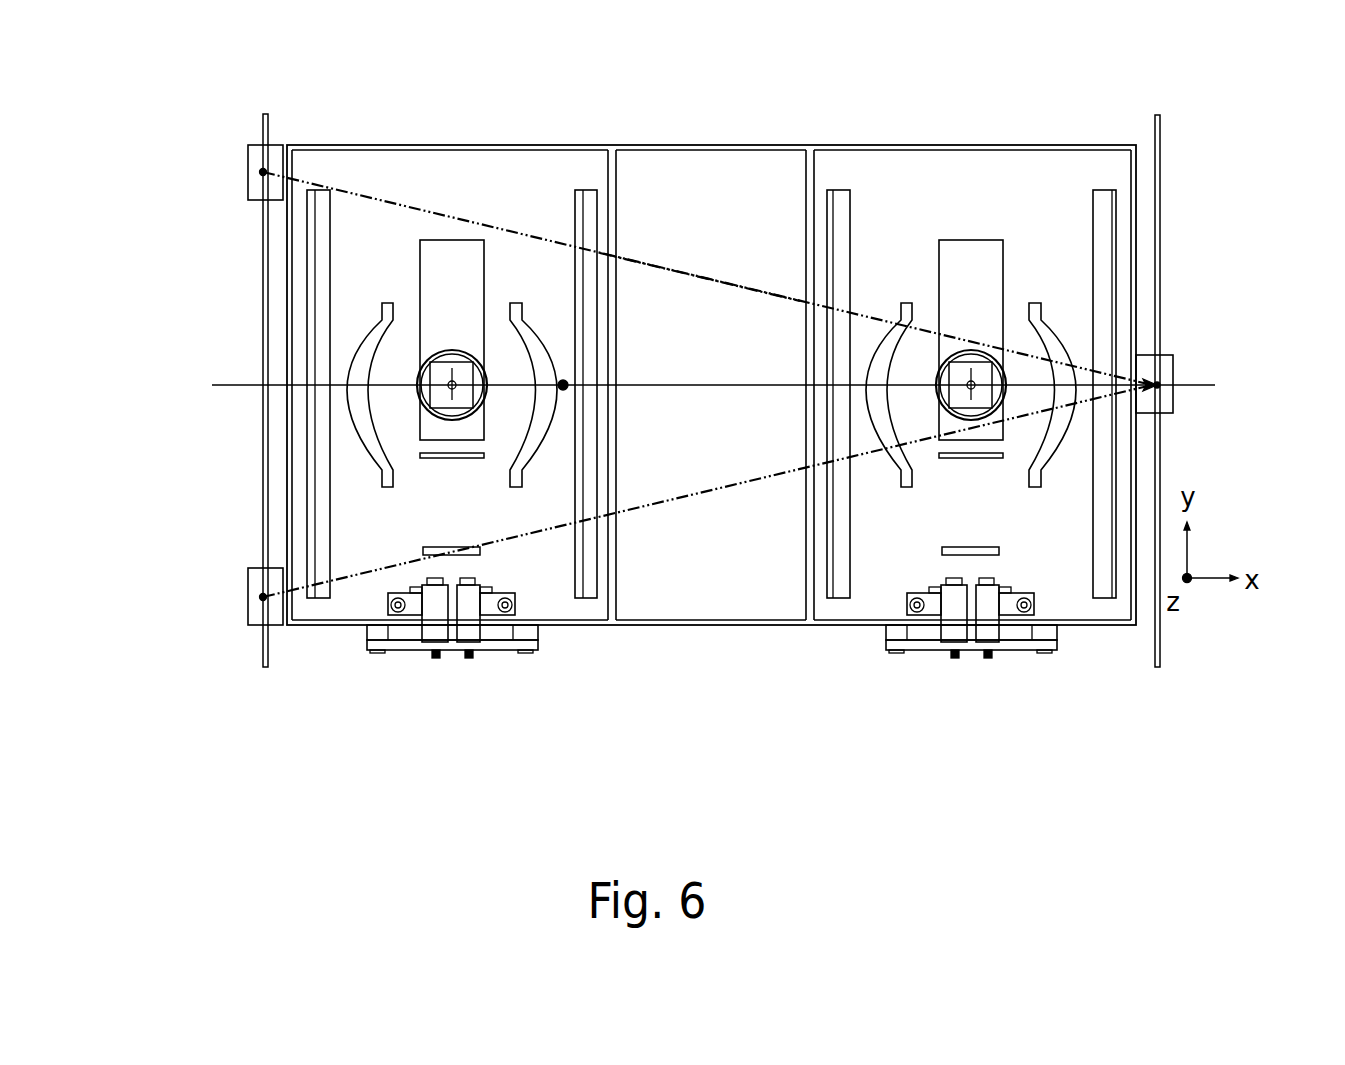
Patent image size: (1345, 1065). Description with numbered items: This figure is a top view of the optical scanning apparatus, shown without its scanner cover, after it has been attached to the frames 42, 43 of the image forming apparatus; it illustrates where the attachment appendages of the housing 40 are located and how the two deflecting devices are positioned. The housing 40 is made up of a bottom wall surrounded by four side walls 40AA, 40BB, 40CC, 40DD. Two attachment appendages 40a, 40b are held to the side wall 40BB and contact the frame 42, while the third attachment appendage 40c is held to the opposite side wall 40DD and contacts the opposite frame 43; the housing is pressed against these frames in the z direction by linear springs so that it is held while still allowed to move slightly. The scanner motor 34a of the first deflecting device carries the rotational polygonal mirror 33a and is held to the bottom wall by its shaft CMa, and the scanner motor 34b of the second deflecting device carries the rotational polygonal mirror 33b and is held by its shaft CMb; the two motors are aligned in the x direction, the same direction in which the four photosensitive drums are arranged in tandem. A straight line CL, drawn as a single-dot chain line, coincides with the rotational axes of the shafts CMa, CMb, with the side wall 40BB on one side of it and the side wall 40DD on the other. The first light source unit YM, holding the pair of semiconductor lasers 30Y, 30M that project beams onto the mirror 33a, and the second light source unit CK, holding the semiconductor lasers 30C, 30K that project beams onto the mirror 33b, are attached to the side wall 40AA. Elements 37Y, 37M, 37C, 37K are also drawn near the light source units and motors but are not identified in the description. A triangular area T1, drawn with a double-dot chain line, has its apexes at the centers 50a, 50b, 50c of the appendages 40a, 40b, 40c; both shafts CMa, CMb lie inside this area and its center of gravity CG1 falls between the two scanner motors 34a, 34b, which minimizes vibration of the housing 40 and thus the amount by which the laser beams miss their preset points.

The semiconductor laser 30Y is at (435, 658).
The semiconductor laser 30M is at (468, 658).
The semiconductor laser 30C is at (954, 658).
The semiconductor laser 30K is at (988, 658).
The first light source unit YM is at (485, 792).
The second light source unit CK is at (1030, 793).
The rotational polygonal mirror 33a is at (452, 385).
The rotational polygonal mirror 33b is at (971, 385).
The scanner motor 34a is at (437, 240).
The scanner motor 34b is at (975, 240).
The shaft CMa is at (433, 357).
The shaft CMb is at (940, 400).
The guide plate 37Y is at (332, 190).
The guide plate 37M is at (582, 190).
The guide plate 37C is at (833, 190).
The guide plate 37K is at (1105, 190).
The housing 40 is at (662, 145).
The side wall 40AA is at (707, 627).
The side wall 40BB is at (287, 418).
The side wall 40CC is at (695, 145).
The side wall 40DD is at (1137, 328).
The attachment appendage 40a is at (248, 587).
The attachment appendage 40b is at (248, 190).
The attachment appendage 40c is at (1173, 402).
The frame 42 is at (266, 525).
The frame 43 is at (1158, 252).
The center of attachment appendage 50a is at (263, 597).
The center of attachment appendage 50b is at (263, 172).
The center of attachment appendage 50c is at (1157, 383).
The triangular area T1 is at (750, 288).
The center of gravity CG1 is at (563, 383).
The straight line CL is at (722, 385).